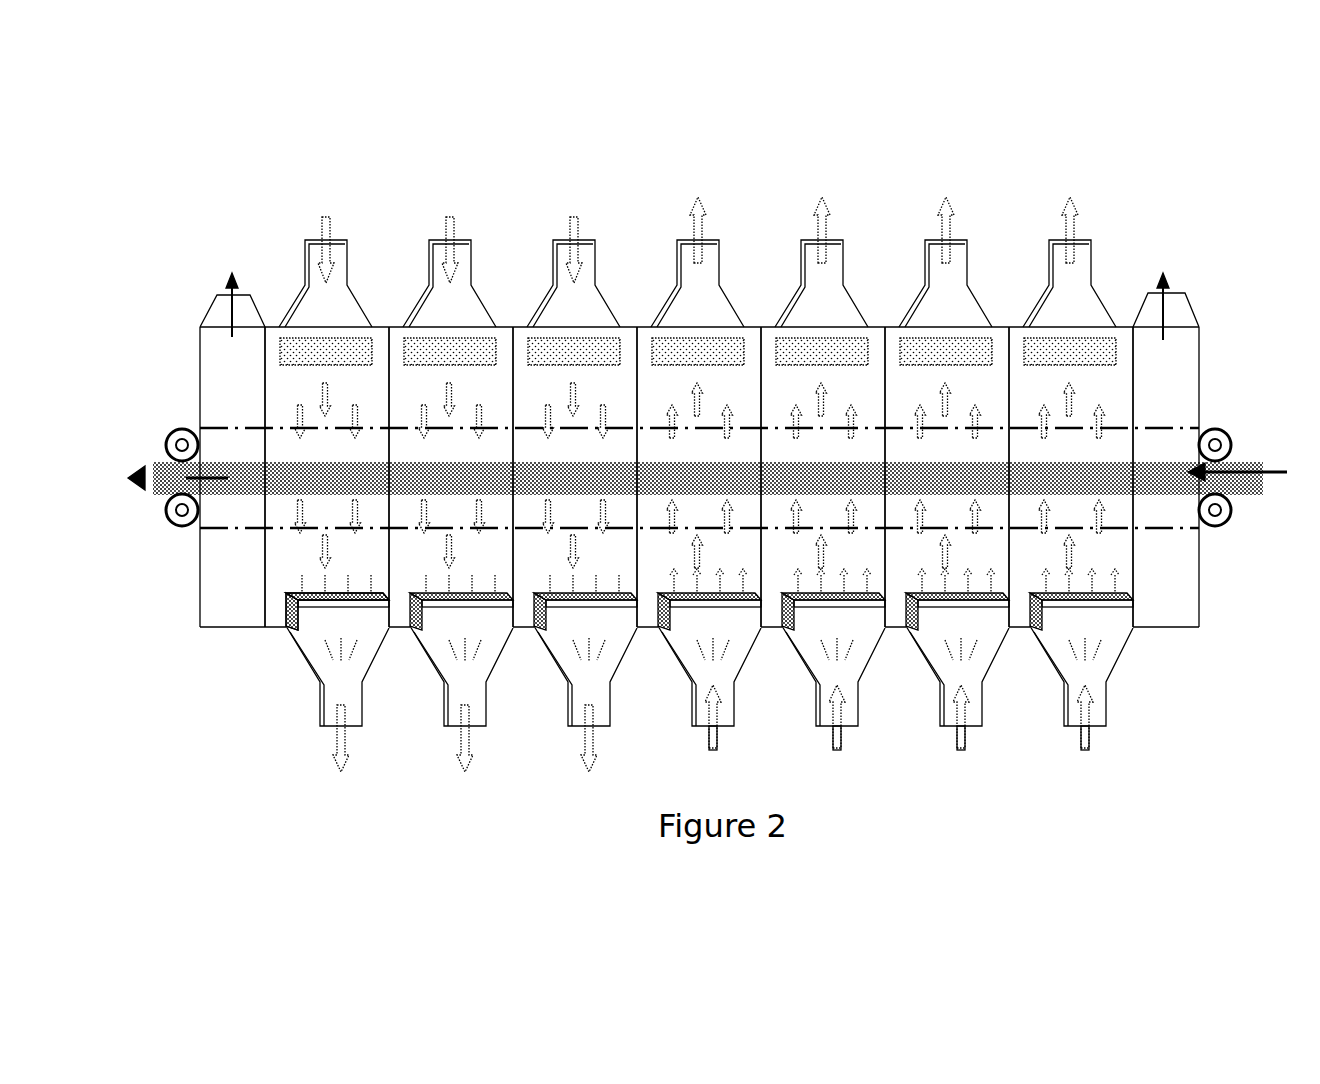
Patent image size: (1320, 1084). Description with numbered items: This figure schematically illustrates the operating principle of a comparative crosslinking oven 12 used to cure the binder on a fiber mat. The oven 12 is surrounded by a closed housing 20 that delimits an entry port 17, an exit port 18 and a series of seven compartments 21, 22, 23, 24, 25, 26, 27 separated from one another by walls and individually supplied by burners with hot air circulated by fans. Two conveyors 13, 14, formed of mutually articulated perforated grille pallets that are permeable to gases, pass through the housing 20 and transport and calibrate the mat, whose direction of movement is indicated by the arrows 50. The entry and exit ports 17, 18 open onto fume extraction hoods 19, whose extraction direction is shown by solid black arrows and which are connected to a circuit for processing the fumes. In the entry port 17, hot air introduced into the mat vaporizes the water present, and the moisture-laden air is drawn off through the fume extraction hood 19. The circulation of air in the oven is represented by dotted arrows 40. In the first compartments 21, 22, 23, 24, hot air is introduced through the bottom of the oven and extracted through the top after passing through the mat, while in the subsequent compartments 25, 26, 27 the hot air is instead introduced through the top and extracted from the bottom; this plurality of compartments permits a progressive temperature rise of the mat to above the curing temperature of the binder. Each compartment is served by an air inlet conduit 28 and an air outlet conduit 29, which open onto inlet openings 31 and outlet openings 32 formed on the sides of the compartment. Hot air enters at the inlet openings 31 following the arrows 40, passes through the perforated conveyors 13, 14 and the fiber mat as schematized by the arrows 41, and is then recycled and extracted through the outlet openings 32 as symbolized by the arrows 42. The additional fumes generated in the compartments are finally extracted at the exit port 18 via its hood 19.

The oven 12 is at (1122, 263).
The conveyor 13 is at (182, 428).
The conveyor 14 is at (178, 530).
The entry port 17 is at (1160, 477).
The exit port 18 is at (237, 477).
The fume extraction hood 19 is at (222, 317).
The closed housing 20 is at (1200, 352).
The compartment 21 is at (1071, 494).
The compartment 22 is at (947, 494).
The compartment 23 is at (823, 494).
The compartment 24 is at (699, 494).
The compartment 25 is at (575, 494).
The compartment 26 is at (451, 494).
The compartment 27 is at (327, 494).
The air inlet conduit 28 is at (443, 677).
The air outlet conduit 29 is at (320, 305).
The hot air inlet opening 31 is at (282, 622).
The air outlet opening 32 is at (278, 347).
The air circulation arrows 40 is at (1083, 741).
The air passage arrows 41 is at (1083, 450).
The air extraction arrows 42 is at (1070, 218).
The direction of movement of the mat 50 is at (150, 482).